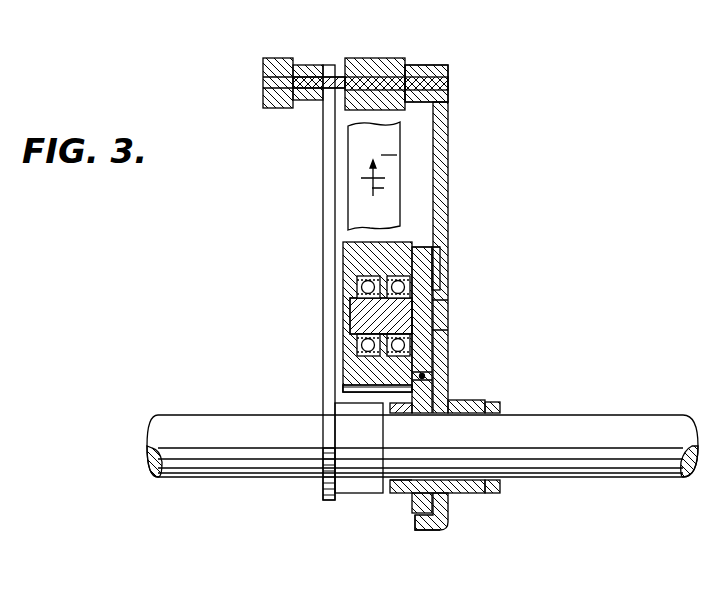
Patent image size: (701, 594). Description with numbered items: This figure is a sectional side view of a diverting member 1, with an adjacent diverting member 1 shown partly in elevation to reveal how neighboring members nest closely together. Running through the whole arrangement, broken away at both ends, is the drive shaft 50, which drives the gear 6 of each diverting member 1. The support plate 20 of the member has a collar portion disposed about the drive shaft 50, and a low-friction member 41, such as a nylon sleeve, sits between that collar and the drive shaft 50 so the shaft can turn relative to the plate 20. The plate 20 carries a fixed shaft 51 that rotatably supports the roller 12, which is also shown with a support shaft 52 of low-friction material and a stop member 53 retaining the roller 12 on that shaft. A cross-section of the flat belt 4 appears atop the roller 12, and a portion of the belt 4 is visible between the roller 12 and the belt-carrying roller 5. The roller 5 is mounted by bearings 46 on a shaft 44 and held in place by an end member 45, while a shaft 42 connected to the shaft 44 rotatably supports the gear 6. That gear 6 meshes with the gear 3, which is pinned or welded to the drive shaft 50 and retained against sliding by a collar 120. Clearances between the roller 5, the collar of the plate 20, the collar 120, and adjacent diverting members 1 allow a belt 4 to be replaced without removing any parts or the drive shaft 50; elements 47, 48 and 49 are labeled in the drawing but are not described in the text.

The diverting member 1 is at (322, 158).
The gear 3 is at (410, 512).
The flat belt 4 is at (272, 58).
The belt-carrying roller 5 is at (352, 262).
The gear 6 is at (420, 268).
The roller 12 is at (422, 65).
The support plate 20 is at (312, 65).
The low-friction member 41 is at (500, 408).
The shaft 42 is at (445, 316).
The shaft 44 is at (356, 340).
The end member 45 is at (350, 318).
The bearings 46 is at (393, 278).
The pin 47 is at (426, 377).
The bracket 48 is at (425, 242).
The hook 49 is at (440, 532).
The drive shaft 50 is at (210, 426).
The shaft 51 is at (449, 84).
The support shaft 52 is at (388, 70).
The stop member 53 is at (340, 78).
The collar 120 is at (396, 493).